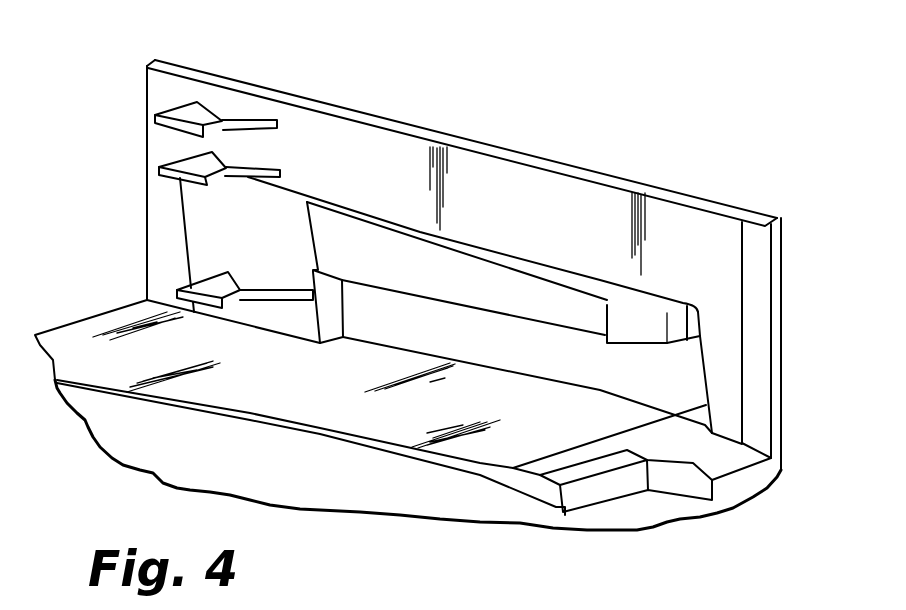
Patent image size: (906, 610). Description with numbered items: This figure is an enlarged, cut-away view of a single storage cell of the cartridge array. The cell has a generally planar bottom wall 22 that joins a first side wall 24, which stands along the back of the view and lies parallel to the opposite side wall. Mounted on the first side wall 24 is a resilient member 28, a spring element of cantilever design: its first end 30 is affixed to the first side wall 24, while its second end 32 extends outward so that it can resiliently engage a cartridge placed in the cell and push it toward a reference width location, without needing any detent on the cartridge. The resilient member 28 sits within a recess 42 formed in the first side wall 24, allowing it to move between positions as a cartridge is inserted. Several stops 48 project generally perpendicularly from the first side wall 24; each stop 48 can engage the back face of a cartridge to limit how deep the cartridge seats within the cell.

The bottom wall 22 is at (337, 405).
The first side wall 24 is at (688, 253).
The resilient member 28 is at (540, 298).
The first end 30 is at (320, 242).
The second end 32 is at (607, 332).
The recess 42 is at (686, 381).
The stop 48 is at (240, 298).